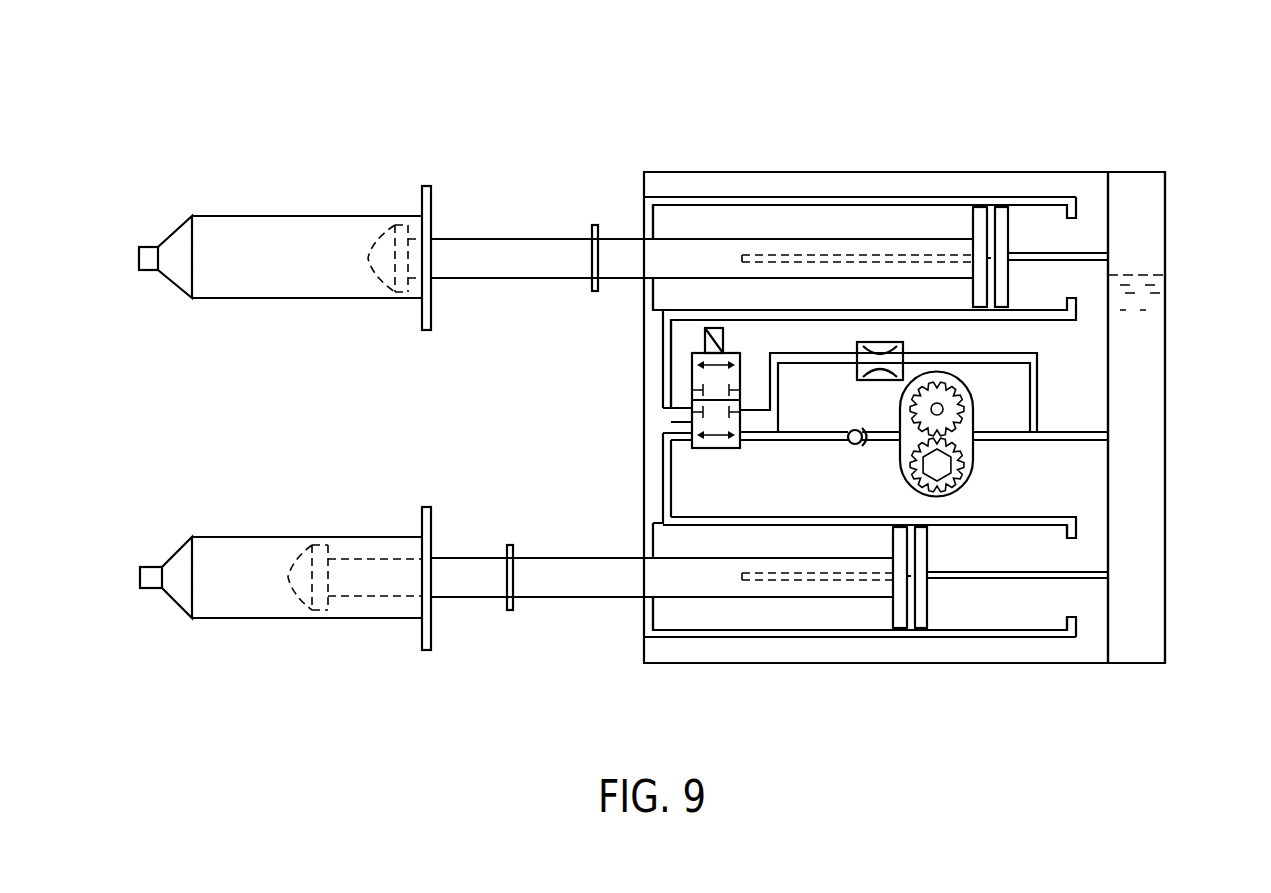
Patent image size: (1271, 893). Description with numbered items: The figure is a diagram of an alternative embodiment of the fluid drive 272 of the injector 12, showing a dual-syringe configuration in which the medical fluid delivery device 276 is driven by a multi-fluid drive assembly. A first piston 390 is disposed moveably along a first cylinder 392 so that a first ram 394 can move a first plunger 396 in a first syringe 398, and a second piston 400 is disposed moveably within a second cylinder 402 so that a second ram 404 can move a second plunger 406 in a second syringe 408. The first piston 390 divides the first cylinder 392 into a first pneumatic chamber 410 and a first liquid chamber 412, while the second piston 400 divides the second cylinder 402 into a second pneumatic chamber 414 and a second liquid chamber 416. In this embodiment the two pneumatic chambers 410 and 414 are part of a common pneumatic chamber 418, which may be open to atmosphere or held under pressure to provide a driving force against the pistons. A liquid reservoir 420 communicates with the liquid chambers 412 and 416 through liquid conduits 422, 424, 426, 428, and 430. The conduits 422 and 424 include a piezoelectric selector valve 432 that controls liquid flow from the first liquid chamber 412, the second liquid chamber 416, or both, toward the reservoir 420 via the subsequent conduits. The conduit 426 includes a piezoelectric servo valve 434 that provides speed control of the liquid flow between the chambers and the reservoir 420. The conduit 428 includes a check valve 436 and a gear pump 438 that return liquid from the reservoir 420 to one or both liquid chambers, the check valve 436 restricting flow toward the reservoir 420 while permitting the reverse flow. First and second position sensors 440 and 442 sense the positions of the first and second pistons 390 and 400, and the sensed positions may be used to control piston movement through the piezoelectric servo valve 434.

The injector 12 is at (692, 94).
The fluid drive 272 is at (1150, 102).
The medical fluid delivery device 276 is at (210, 386).
The first piston 390 is at (978, 205).
The first cylinder 392 is at (820, 205).
The first ram 394 is at (622, 237).
The first plunger 396 is at (495, 280).
The first syringe 398 is at (283, 215).
The second piston 400 is at (920, 628).
The second cylinder 402 is at (820, 640).
The second ram 404 is at (590, 598).
The second plunger 406 is at (505, 606).
The second syringe 408 is at (285, 618).
The first pneumatic chamber 410 is at (1055, 213).
The first liquid chamber 412 is at (698, 213).
The second pneumatic chamber 414 is at (1005, 618).
The second liquid chamber 416 is at (727, 617).
The common pneumatic chamber 418 is at (1092, 663).
The liquid reservoir 420 is at (1150, 380).
The liquid conduit 422 is at (663, 375).
The liquid conduit 424 is at (660, 468).
The liquid conduit 426 is at (973, 353).
The liquid conduit 428 is at (805, 430).
The liquid conduit 430 is at (1080, 430).
The piezoelectric selector valve 432 is at (678, 422).
The piezoelectric servo valve 434 is at (857, 350).
The check valve 436 is at (850, 442).
The gear pump 438 is at (980, 453).
The first position sensor 440 is at (1097, 258).
The second position sensor 442 is at (1093, 570).